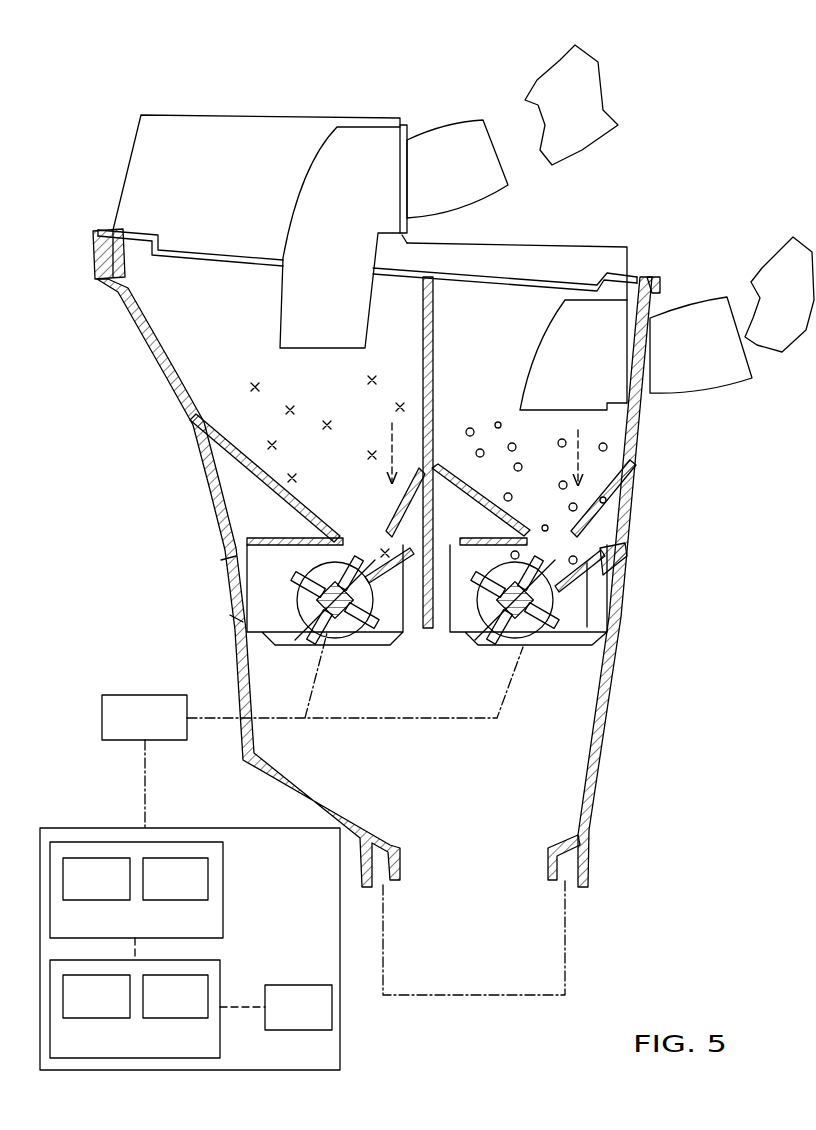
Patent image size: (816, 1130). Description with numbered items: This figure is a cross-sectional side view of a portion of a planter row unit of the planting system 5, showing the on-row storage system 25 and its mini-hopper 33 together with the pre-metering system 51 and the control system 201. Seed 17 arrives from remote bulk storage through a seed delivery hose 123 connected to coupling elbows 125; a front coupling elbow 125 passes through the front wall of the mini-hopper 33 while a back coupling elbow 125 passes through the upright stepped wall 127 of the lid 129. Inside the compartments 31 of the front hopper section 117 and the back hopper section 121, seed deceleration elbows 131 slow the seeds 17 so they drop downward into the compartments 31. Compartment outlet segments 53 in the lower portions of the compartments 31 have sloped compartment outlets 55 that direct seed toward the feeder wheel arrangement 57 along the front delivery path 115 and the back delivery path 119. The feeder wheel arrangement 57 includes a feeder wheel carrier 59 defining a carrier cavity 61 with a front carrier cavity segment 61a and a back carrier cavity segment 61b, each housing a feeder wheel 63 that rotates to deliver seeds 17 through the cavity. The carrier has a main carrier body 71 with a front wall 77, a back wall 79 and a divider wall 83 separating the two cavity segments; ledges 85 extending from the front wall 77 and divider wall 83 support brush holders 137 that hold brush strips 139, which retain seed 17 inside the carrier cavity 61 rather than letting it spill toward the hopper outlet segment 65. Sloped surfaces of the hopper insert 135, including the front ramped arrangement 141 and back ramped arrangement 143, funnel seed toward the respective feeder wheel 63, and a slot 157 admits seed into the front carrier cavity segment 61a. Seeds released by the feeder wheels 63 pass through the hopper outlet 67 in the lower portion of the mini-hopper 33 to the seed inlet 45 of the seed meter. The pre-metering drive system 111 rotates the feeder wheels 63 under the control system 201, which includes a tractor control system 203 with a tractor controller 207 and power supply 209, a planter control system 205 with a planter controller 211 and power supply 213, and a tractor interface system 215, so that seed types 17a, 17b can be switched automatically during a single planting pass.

The planting system 5 is at (705, 120).
The on-row storage system 25 is at (222, 45).
The seed 17 is at (392, 400).
The first seed type 17a is at (470, 428).
The second seed type 17b is at (327, 428).
The compartment 31 is at (185, 305).
The mini-hopper 33 is at (672, 496).
The seed inlet 45 is at (580, 948).
The pre-metering system 51 is at (241, 558).
The compartment outlet segment 53 is at (255, 425).
The compartment outlet 55 is at (362, 527).
The feeder wheel arrangement 57 is at (212, 597).
The feeder wheel carrier 59 is at (233, 621).
The carrier cavity 61 is at (406, 573).
The front carrier cavity segment 61a is at (500, 600).
The back carrier cavity segment 61b is at (255, 598).
The feeder wheel 63 is at (370, 640).
The hopper outlet segment 65 is at (565, 765).
The hopper outlet 67 is at (500, 835).
The main carrier body 71 is at (603, 582).
The front wall 77 is at (615, 563).
The back wall 79 is at (225, 567).
The divider wall 83 is at (480, 600).
The ledge 85 is at (443, 635).
The pre-metering drive system 111 is at (148, 695).
The front delivery path 115 is at (578, 428).
The front hopper section 117 is at (503, 292).
The back delivery path 119 is at (385, 452).
The back hopper section 121 is at (195, 278).
The seed delivery hose 123 is at (545, 50).
The coupling elbow 125 is at (467, 142).
The upright stepped wall 127 is at (400, 178).
The lid 129 is at (270, 115).
The seed deceleration elbow 131 is at (318, 185).
The hopper insert 135 is at (260, 505).
The brush holder 137 is at (430, 565).
The brush strip 139 is at (383, 620).
The front ramped arrangement 141 is at (643, 515).
The back ramped arrangement 143 is at (232, 490).
The slot 157 is at (530, 500).
The control system 201 is at (230, 949).
The tractor control system 203 is at (177, 1014).
The planter control system 205 is at (177, 892).
The tractor controller 207 is at (108, 1010).
The power supply 209 is at (183, 1010).
The planter controller 211 is at (108, 890).
The power supply 213 is at (183, 890).
The tractor interface system 215 is at (297, 985).